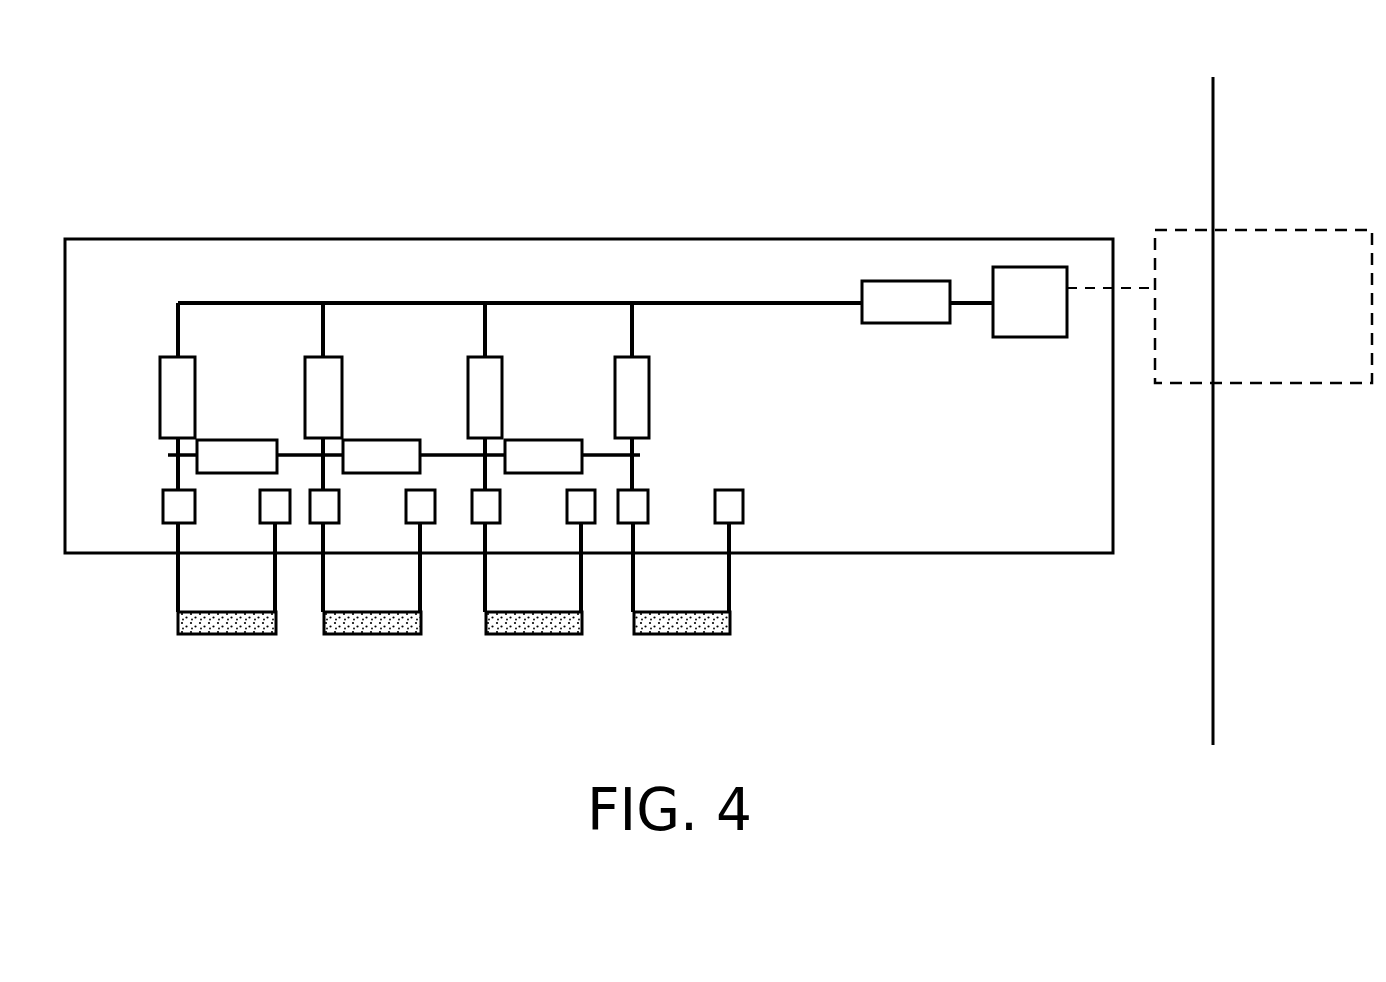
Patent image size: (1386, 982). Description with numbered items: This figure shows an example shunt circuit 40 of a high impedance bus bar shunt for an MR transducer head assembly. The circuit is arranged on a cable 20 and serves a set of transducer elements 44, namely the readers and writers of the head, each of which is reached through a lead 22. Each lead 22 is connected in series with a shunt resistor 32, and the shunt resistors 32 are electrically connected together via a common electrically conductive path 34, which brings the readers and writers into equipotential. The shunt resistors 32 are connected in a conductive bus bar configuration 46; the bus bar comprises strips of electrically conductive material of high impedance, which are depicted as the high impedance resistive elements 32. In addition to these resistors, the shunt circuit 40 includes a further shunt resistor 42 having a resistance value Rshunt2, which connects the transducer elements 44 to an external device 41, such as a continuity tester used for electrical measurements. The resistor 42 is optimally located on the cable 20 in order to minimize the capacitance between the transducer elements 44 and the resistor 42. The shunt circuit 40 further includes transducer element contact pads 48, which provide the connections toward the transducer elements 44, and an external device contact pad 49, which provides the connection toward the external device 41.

The shunt circuit 40 is at (247, 64).
The cable 20 is at (1085, 553).
The common electrically conductive path 34 is at (558, 303).
The conductive bus bar configuration 46 is at (417, 346).
The shunt resistor 32 is at (540, 436).
The transducer element contact pad 48 is at (743, 505).
The lead 22 is at (177, 580).
The transducer element 44 is at (680, 635).
The shunt resistor 42 is at (905, 292).
The external device contact pad 49 is at (1010, 267).
The external device 41 is at (1262, 385).